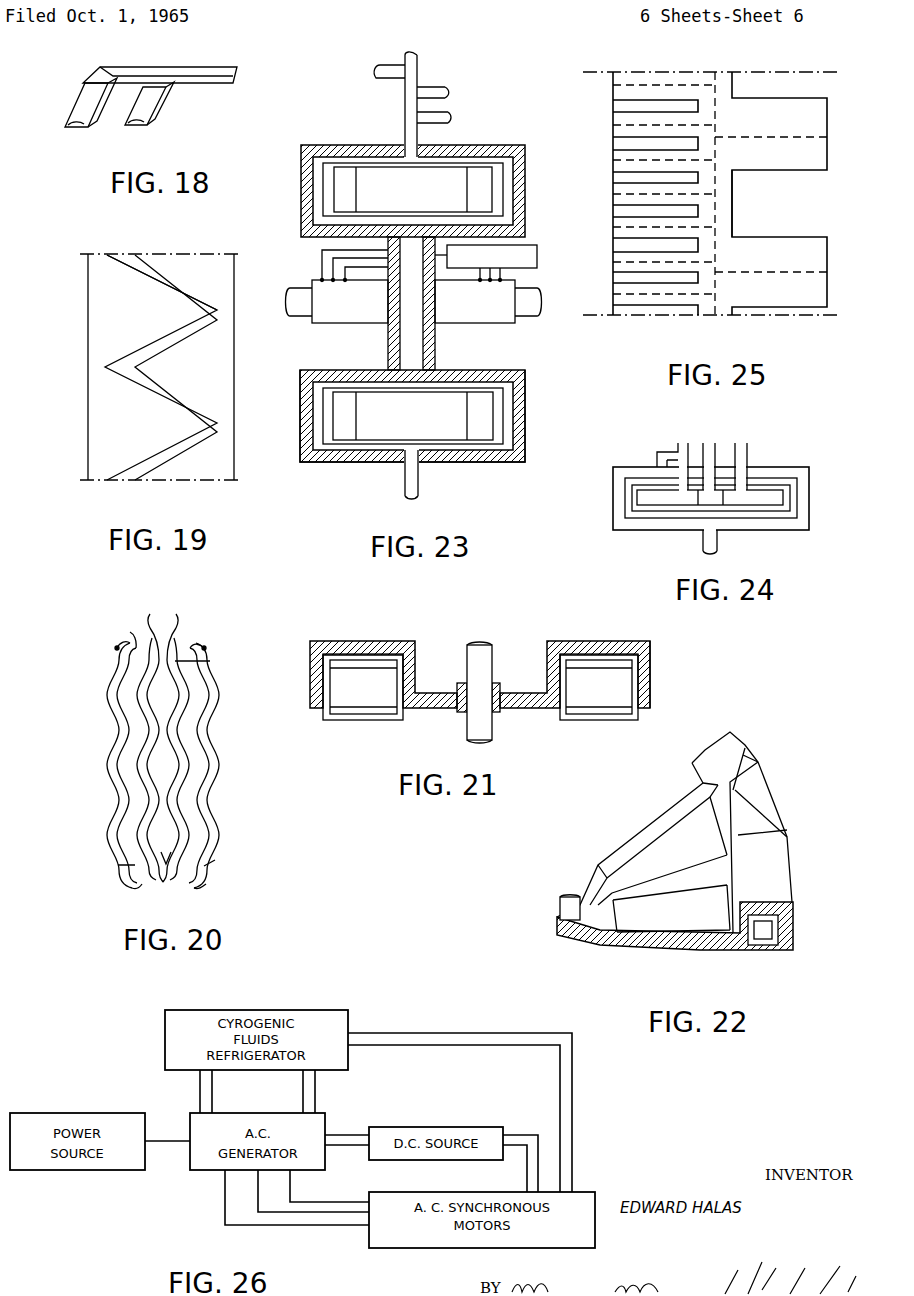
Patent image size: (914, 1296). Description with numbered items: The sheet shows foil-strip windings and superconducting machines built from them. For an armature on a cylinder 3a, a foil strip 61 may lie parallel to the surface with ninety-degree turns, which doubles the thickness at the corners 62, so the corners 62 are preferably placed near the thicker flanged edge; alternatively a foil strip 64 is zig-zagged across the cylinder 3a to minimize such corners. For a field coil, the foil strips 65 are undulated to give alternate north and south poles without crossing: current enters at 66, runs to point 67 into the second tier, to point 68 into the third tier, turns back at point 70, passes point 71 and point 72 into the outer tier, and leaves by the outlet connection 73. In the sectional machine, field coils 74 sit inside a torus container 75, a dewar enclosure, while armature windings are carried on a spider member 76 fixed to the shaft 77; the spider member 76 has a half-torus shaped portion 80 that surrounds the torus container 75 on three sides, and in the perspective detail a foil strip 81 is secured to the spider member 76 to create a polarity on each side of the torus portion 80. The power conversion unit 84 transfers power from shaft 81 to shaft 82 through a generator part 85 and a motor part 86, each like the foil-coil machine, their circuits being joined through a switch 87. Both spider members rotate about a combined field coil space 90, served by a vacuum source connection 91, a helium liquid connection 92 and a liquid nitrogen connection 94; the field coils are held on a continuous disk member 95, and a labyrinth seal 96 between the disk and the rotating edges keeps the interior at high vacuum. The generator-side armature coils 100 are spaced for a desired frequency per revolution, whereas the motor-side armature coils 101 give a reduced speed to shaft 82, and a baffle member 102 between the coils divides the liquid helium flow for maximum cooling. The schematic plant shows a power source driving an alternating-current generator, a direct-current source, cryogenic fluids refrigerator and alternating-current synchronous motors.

In FIG. 18, the strip 61 is at (240, 73).
In FIG. 18, the corners 62 is at (97, 74).
In FIG. 19, the foil strip 64 is at (186, 292).
In FIG. 19, the cylinder 3a is at (220, 371).
In FIG. 20, the foil strips 65 is at (212, 753).
In FIG. 20, the current entry point 66 is at (117, 648).
In FIG. 20, the point 67 is at (116, 748).
In FIG. 20, the point 68 is at (131, 745).
In FIG. 20, the point 70 is at (166, 862).
In FIG. 20, the point 71 is at (203, 771).
In FIG. 20, the point 72 is at (205, 742).
In FIG. 20, the outlet connection 73 is at (207, 648).
In FIG. 21, the field coils 74 is at (353, 722).
In FIG. 21, the torus container 75 is at (372, 722).
In FIG. 22, the torus container 75 is at (770, 947).
In FIG. 21, the spider member 76 is at (572, 634).
In FIG. 22, the spider member 76 is at (674, 819).
In FIG. 21, the shaft 77 is at (486, 656).
In FIG. 22, the shaft 77 is at (558, 908).
In FIG. 21, the half-torus shaped portion 80 is at (650, 676).
In FIG. 22, the half-torus shaped portion 80 is at (737, 757).
In FIG. 23, the foil strip 81 is at (528, 312).
In FIG. 22, the foil strip 81 is at (711, 885).
In FIG. 23, the shaft 82 is at (298, 312).
In FIG. 23, the power conversion unit 84 is at (512, 143).
In FIG. 23, the generator part 85 is at (518, 372).
In FIG. 23, the motor part 86 is at (527, 425).
In FIG. 23, the switch 87 is at (538, 245).
In FIG. 23, the combined field coil space 90 is at (424, 423).
In FIG. 23, the vacuum source connection 91 is at (410, 60).
In FIG. 24, the vacuum source connection 91 is at (683, 445).
In FIG. 23, the helium liquid connection 92 is at (435, 86).
In FIG. 24, the helium liquid connection 92 is at (712, 445).
In FIG. 23, the liquid nitrogen connection 94 is at (443, 124).
In FIG. 24, the liquid nitrogen connection 94 is at (743, 445).
In FIG. 23, the continuous disk member 95 is at (428, 474).
In FIG. 23, the labyrinth seal 96 is at (404, 136).
In FIG. 25, the armature coils 100 is at (776, 98).
In FIG. 24, the armature coils 100 is at (752, 512).
In FIG. 25, the armature coils 101 is at (647, 193).
In FIG. 24, the armature coils 101 is at (667, 512).
In FIG. 25, the baffle member 102 is at (769, 137).